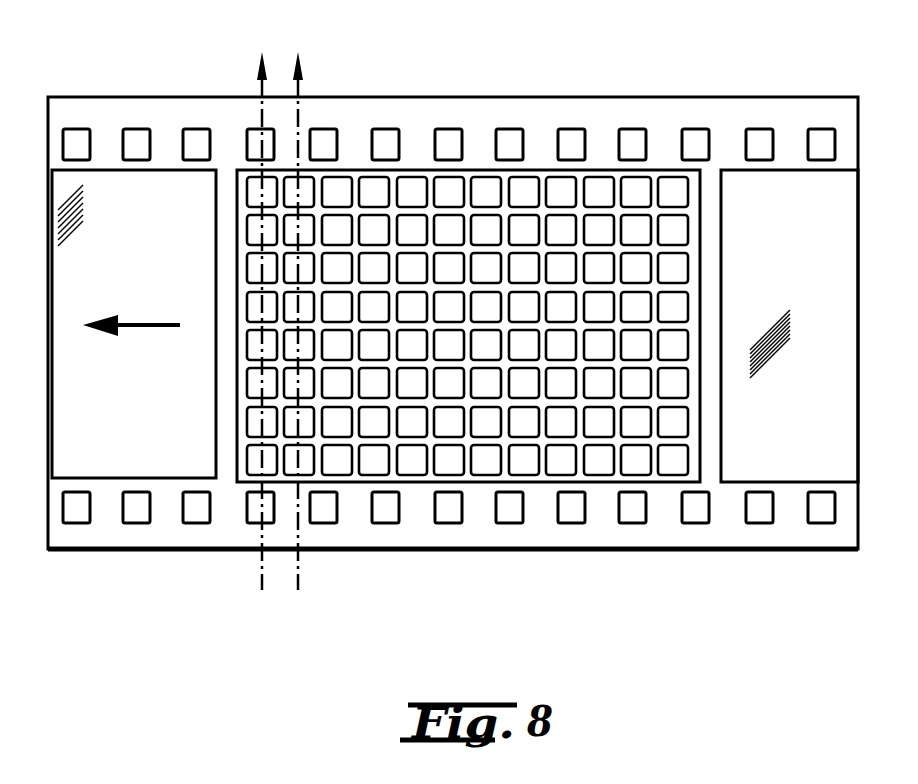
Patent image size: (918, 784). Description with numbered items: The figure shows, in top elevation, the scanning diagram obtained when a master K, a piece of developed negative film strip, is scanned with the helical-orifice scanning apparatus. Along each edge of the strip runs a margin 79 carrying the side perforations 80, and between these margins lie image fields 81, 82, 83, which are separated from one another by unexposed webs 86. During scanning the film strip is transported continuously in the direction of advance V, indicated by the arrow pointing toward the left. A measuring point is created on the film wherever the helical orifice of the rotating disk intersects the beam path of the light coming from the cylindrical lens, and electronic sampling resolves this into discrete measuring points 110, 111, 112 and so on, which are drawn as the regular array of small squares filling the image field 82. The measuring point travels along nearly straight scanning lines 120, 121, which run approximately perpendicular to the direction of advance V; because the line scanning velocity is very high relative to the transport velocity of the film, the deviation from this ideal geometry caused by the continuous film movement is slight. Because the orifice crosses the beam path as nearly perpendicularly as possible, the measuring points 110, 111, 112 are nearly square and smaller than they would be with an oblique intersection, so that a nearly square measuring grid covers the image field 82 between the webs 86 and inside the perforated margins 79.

The master K is at (650, 98).
The film margin strip 79 is at (449, 110).
The side perforations 80 is at (572, 140).
The image field 81 is at (118, 458).
The image field 82 is at (543, 475).
The image field 83 is at (840, 456).
The webs 86 is at (228, 233).
The measuring point 110 is at (255, 460).
The measuring point 111 is at (255, 420).
The measuring point 112 is at (258, 383).
The scanning line 120 is at (263, 103).
The scanning line 121 is at (296, 103).
The direction of advance V is at (150, 322).